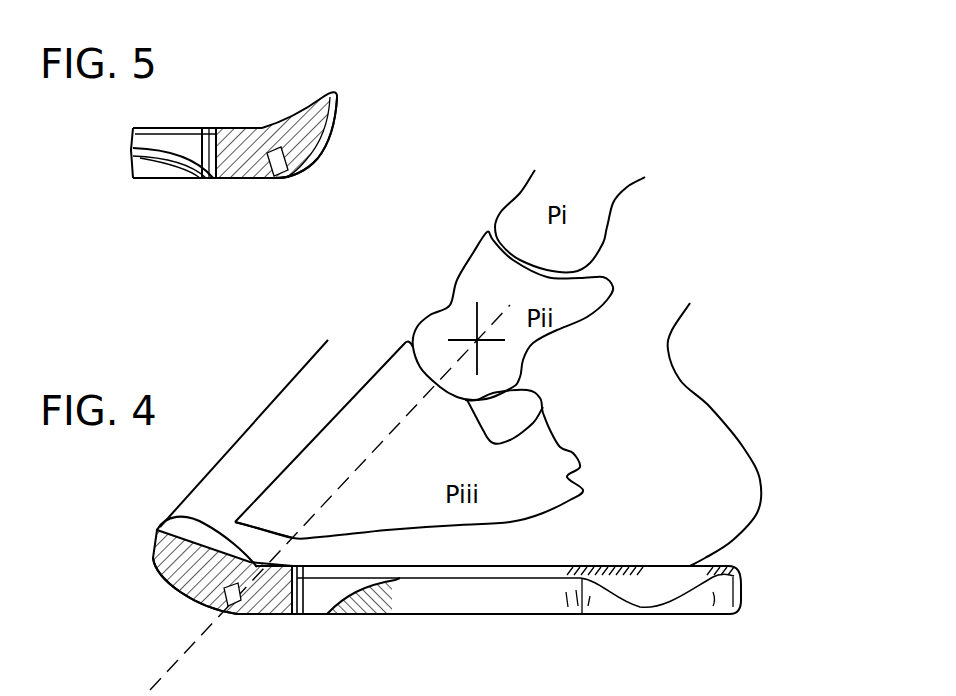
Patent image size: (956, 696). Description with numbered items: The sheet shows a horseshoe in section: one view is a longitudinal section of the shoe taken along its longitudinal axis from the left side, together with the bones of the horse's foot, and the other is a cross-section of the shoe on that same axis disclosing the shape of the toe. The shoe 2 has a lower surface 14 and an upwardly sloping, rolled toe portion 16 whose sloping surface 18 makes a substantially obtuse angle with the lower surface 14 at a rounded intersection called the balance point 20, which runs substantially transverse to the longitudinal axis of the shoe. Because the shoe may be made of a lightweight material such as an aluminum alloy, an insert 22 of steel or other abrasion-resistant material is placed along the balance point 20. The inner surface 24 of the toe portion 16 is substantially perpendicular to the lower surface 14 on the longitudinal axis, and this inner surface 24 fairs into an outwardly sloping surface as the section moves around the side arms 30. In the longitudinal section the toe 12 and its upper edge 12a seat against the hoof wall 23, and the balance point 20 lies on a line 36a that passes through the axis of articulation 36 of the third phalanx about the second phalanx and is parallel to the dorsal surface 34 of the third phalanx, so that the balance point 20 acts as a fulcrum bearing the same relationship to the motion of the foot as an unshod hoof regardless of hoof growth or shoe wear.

In FIG. 4, the horseshoe 2 is at (170, 583).
In FIG. 5, the toe extension 12 is at (302, 116).
In FIG. 5, the upper edge of toe extension 12a is at (247, 128).
In FIG. 4, the upper edge of toe extension 12a is at (170, 515).
In FIG. 5, the lower surface 14 is at (241, 178).
In FIG. 5, the toe portion 16 is at (342, 146).
In FIG. 5, the sloping surface 18 is at (313, 160).
In FIG. 5, the balance point 20 is at (282, 174).
In FIG. 4, the balance point 20 is at (223, 613).
In FIG. 4, the insert 22 is at (222, 612).
In FIG. 4, the hoof wall 23 is at (379, 437).
In FIG. 5, the inner surface 24 is at (190, 178).
In FIG. 4, the inner surface 24 is at (340, 607).
In FIG. 4, the side arms 30 is at (253, 528).
In FIG. 4, the dorsal surface 34 is at (330, 417).
In FIG. 4, the axis of articulation 36 is at (477, 340).
In FIG. 4, the line through the axis of rotation 36a is at (410, 412).